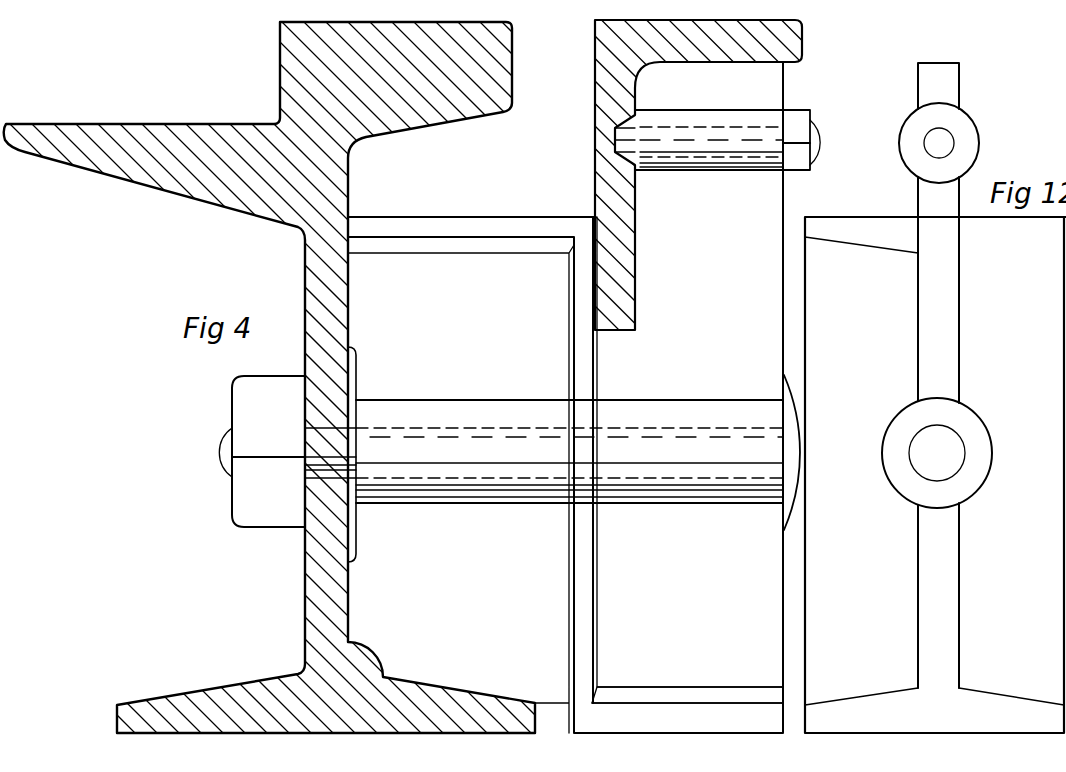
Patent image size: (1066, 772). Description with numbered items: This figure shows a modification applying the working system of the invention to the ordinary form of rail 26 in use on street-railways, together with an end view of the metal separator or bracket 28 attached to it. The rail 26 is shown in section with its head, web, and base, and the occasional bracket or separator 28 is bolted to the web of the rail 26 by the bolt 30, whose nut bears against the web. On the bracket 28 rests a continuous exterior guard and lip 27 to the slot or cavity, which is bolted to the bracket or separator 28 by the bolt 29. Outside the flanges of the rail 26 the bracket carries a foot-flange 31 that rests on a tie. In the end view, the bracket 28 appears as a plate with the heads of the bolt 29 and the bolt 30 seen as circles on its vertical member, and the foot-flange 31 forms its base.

In FIG. 4, the rail 26 is at (318, 603).
In FIG. 4, the continuous exterior guard and lip 27 is at (778, 40).
In FIG. 4, the bracket or separator 28 is at (565, 397).
In FIG. 12, the bracket or separator 28 is at (935, 475).
In FIG. 4, the bolt 29 is at (800, 157).
In FIG. 12, the bolt 29 is at (939, 375).
In FIG. 4, the bolt 30 is at (278, 512).
In FIG. 12, the bolt 30 is at (937, 453).
In FIG. 4, the foot-flange 31 is at (687, 710).
In FIG. 12, the foot-flange 31 is at (934, 711).